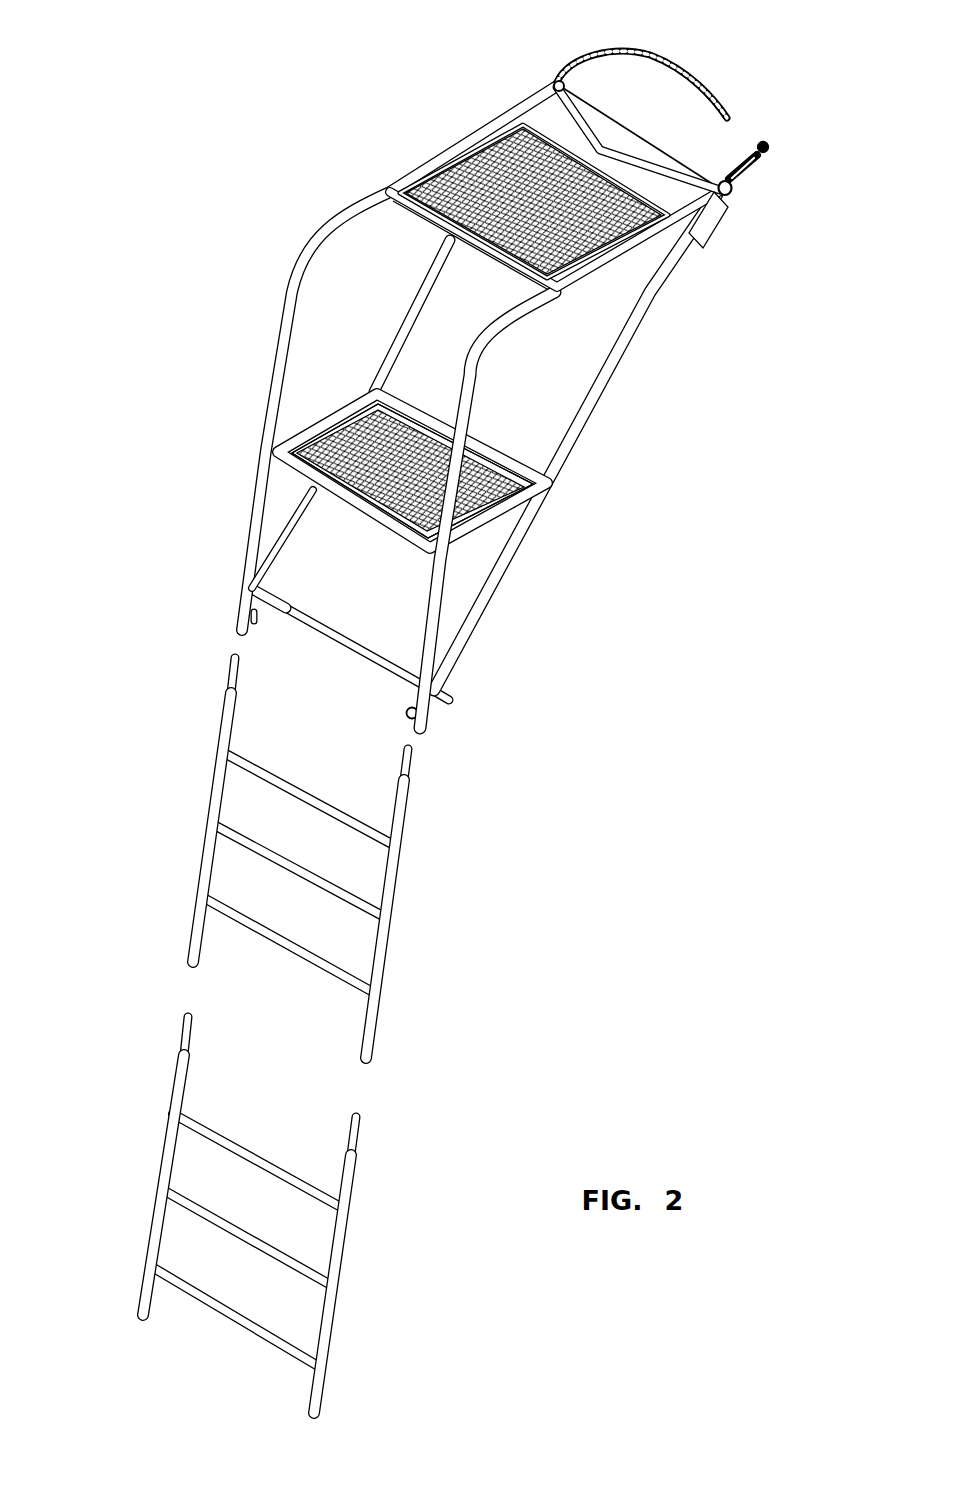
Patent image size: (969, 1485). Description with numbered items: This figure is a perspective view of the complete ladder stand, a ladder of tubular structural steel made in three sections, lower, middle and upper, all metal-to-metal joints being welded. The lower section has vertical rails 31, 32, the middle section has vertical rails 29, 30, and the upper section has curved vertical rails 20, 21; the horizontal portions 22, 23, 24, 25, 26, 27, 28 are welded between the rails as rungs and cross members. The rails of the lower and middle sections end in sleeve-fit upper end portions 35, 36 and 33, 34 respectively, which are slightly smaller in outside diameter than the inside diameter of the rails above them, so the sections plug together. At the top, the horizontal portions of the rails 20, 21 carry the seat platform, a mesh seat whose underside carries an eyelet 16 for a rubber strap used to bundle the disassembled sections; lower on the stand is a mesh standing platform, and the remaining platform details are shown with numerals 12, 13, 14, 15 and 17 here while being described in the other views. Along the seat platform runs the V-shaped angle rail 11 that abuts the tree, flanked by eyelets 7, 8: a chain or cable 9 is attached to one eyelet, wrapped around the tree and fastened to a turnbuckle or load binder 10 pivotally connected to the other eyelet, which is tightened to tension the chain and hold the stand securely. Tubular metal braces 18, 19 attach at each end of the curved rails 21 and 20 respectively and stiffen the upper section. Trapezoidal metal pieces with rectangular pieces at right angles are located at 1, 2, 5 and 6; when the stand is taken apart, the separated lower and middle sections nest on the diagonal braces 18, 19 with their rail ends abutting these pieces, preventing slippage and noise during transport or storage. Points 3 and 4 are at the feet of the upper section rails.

The trapezoidal metal piece 1 is at (451, 694).
The trapezoidal metal piece 2 is at (273, 593).
The left foot 3 is at (254, 618).
The front foot 4 is at (407, 711).
The trapezoidal metal piece 5 is at (700, 245).
The trapezoidal metal piece 6 is at (497, 120).
The eyelet 7 is at (556, 84).
The eyelet 8 is at (733, 192).
The chain or cable 9 is at (707, 100).
The turnbuckle or load binder 10 is at (765, 156).
The V-shaped angle rail 11 is at (587, 115).
The seat platform frame 12 is at (432, 214).
The foot platform 13 is at (392, 496).
The seat support member 14 is at (540, 284).
The foot platform frame 15 is at (483, 458).
The eyelet 16 is at (497, 228).
The foot platform mesh 17 is at (399, 452).
The tubular metal brace 18 is at (578, 443).
The tubular metal brace 19 is at (388, 357).
The vertical rail of the upper section 20 is at (283, 330).
The vertical rail of the upper section 21 is at (478, 390).
The horizontal portion 22 is at (367, 657).
The horizontal portion 23 is at (290, 782).
The horizontal portion 24 is at (285, 861).
The horizontal portion 25 is at (284, 937).
The horizontal portion 26 is at (209, 1131).
The horizontal portion 27 is at (202, 1208).
The horizontal portion 28 is at (249, 1333).
The vertical rail of the middle section 29 is at (200, 850).
The vertical rail of the middle section 30 is at (400, 863).
The vertical rail of the lower section 31 is at (152, 1213).
The vertical rail of the lower section 32 is at (338, 1302).
The sleeve-fit upper end portion 33 is at (229, 673).
The sleeve-fit upper end portion 34 is at (410, 765).
The sleeve-fit upper end portion 35 is at (179, 1028).
The sleeve-fit upper end portion 36 is at (358, 1139).